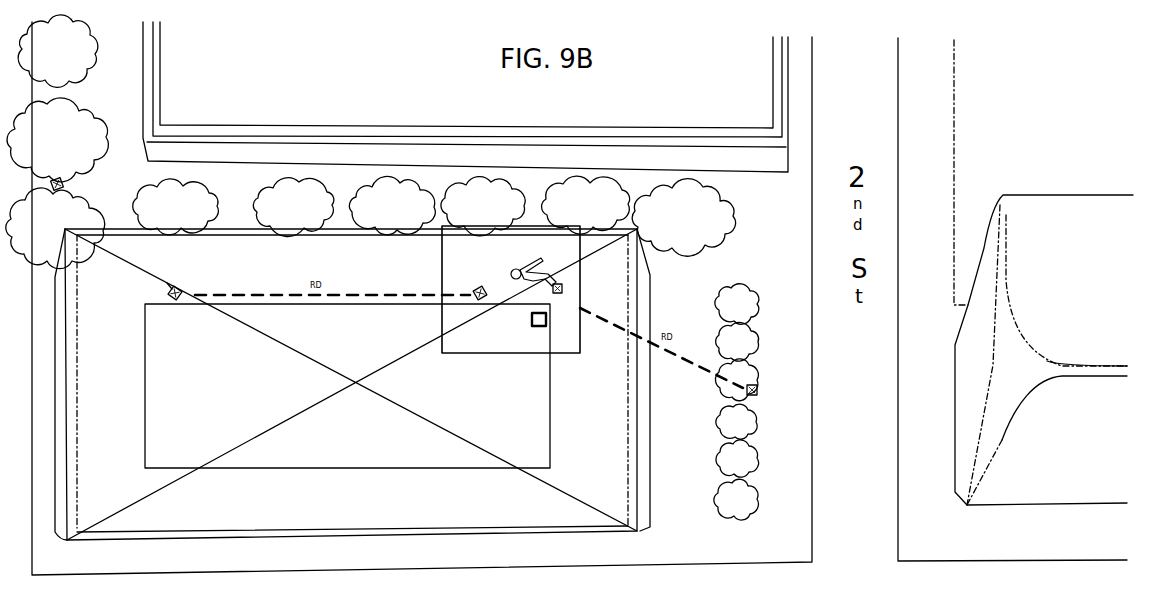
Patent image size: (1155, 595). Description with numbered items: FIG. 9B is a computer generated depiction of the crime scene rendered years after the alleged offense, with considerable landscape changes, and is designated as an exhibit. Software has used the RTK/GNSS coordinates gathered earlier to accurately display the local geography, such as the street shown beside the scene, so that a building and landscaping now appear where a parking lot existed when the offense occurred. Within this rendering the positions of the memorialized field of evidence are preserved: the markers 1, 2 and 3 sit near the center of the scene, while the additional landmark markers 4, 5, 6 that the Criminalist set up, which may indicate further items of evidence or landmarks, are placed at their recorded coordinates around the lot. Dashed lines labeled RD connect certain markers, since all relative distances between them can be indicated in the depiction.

The first evidence marker 1 is at (563, 296).
The second evidence marker 2 is at (475, 289).
The third evidence marker (object) 3 is at (539, 328).
The landmark marker 4 is at (759, 392).
The landmark marker 5 is at (180, 290).
The landmark marker 6 is at (64, 188).